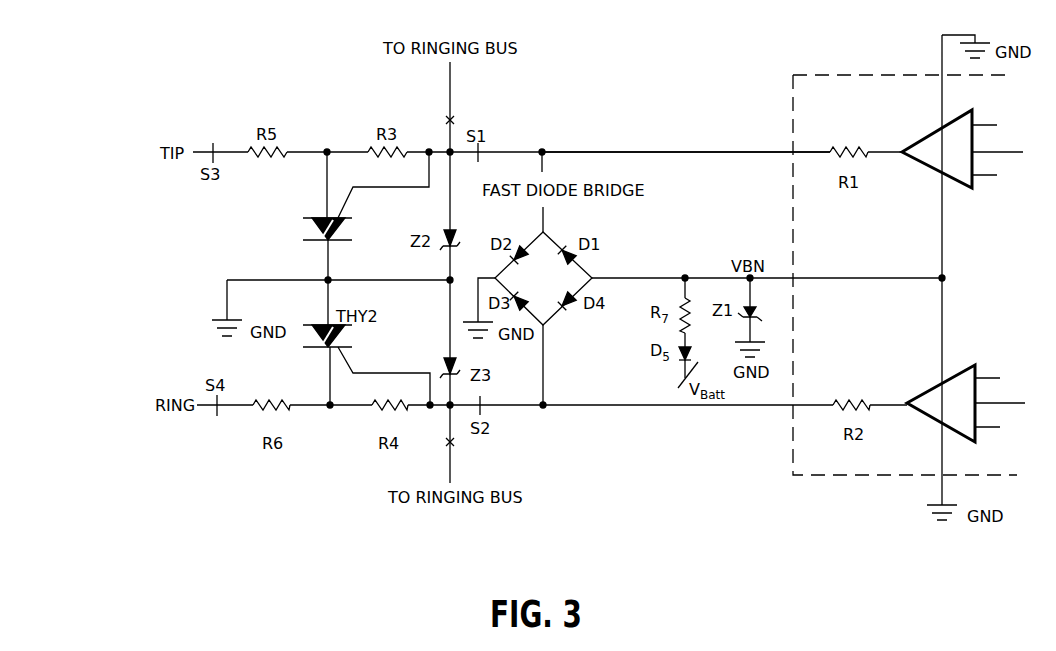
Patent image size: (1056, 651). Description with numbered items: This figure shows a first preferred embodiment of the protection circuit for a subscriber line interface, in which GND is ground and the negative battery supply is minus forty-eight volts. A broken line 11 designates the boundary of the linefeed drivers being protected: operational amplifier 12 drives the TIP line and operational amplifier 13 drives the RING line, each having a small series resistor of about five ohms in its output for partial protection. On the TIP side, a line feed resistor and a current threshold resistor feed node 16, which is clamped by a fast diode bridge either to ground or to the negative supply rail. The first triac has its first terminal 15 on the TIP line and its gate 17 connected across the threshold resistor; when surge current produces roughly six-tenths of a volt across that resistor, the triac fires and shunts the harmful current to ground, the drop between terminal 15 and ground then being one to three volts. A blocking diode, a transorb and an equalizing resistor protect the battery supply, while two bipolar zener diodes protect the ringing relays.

The broken line 11 is at (884, 478).
The operational amplifier 12 is at (975, 149).
The operational amplifier 13 is at (979, 403).
The first terminal of triac THY1 15 is at (329, 186).
The node 16 is at (645, 148).
The gate 17 is at (376, 189).